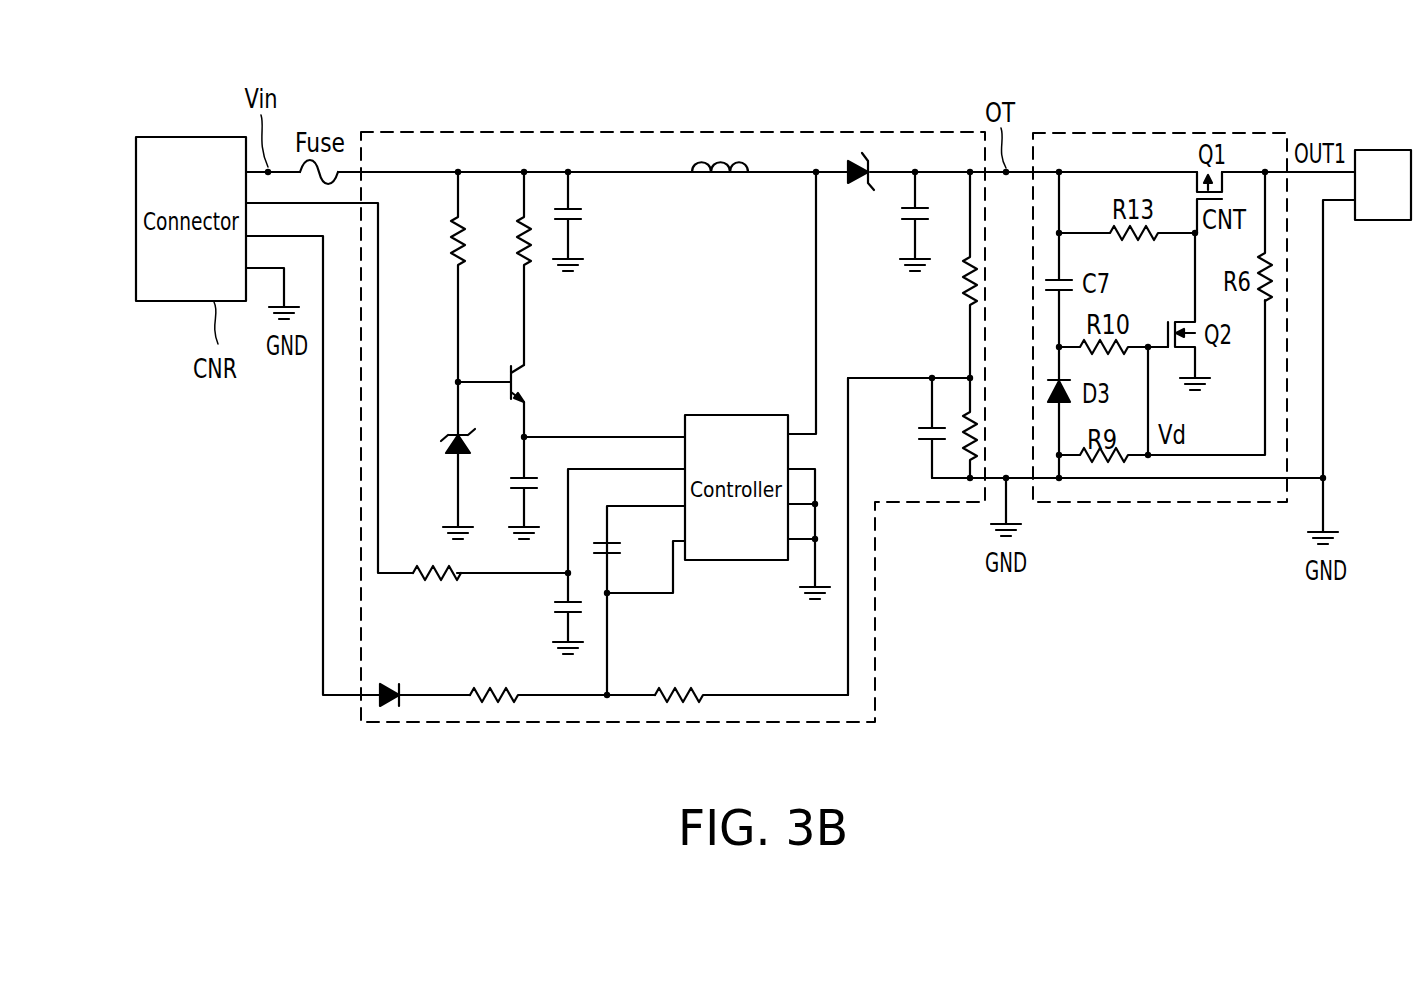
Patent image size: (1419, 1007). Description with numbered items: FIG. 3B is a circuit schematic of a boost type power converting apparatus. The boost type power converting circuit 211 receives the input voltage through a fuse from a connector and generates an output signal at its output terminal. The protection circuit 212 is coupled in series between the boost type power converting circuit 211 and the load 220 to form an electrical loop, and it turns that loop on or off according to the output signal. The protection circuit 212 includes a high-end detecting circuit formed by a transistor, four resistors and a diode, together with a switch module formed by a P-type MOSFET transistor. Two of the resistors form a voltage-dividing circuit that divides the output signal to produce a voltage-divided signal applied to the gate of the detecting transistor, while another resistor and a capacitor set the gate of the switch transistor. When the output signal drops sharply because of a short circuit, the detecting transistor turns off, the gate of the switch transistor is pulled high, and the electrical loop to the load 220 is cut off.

The boost type power converting circuit 211 is at (877, 688).
The protection circuit 212 is at (1169, 506).
The load 220 is at (1383, 150).